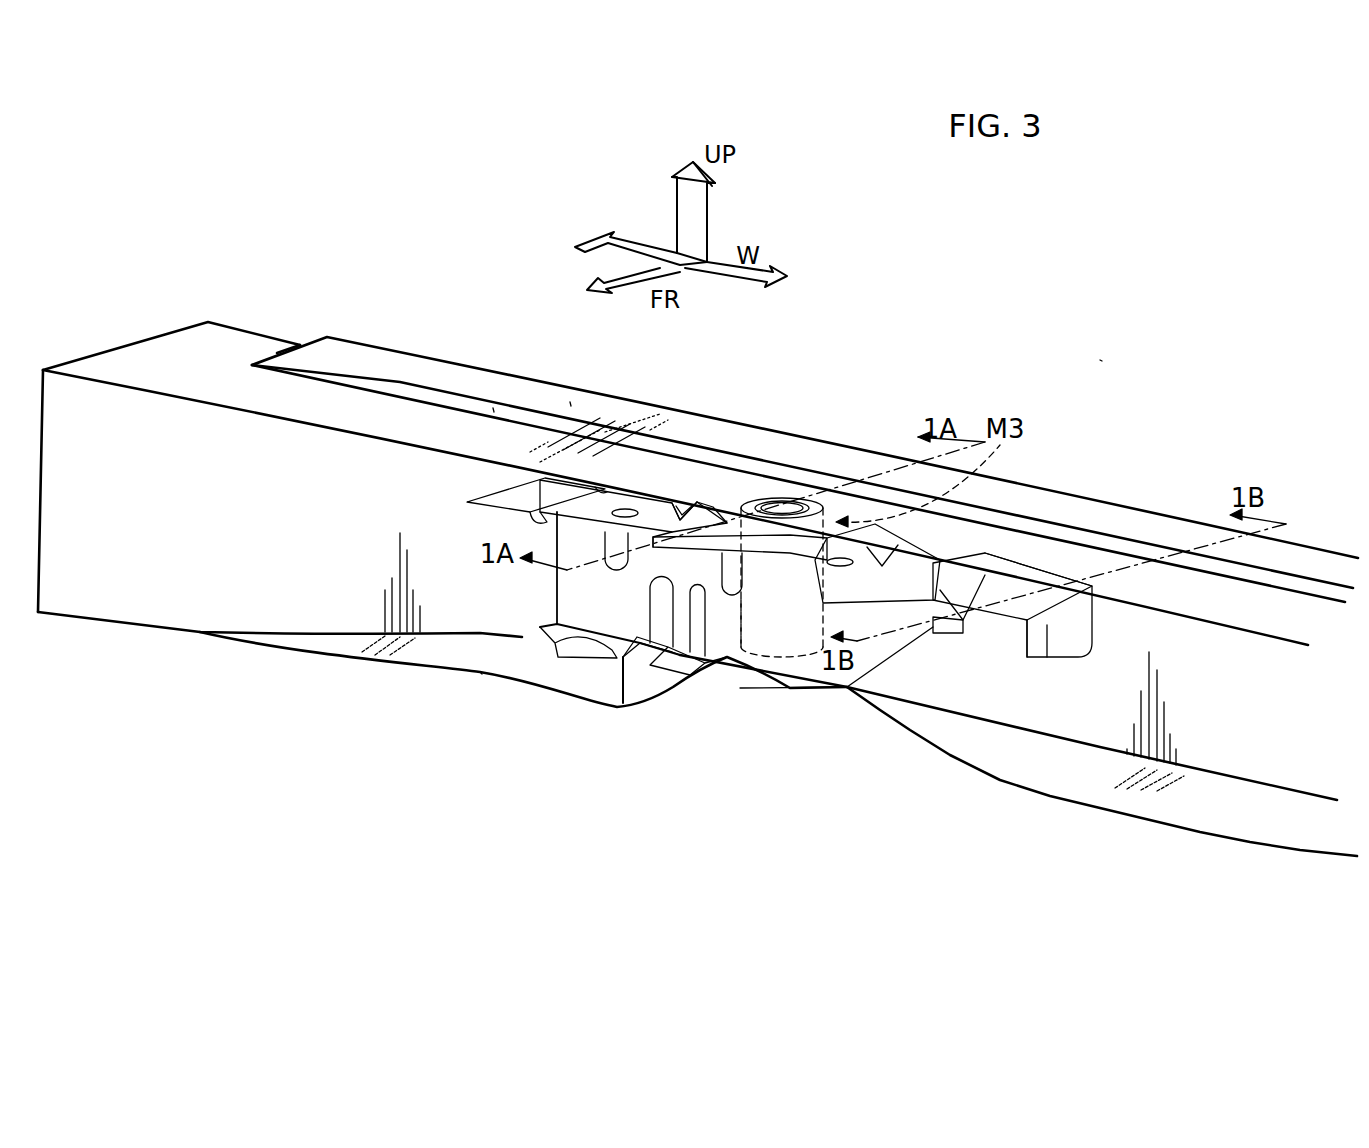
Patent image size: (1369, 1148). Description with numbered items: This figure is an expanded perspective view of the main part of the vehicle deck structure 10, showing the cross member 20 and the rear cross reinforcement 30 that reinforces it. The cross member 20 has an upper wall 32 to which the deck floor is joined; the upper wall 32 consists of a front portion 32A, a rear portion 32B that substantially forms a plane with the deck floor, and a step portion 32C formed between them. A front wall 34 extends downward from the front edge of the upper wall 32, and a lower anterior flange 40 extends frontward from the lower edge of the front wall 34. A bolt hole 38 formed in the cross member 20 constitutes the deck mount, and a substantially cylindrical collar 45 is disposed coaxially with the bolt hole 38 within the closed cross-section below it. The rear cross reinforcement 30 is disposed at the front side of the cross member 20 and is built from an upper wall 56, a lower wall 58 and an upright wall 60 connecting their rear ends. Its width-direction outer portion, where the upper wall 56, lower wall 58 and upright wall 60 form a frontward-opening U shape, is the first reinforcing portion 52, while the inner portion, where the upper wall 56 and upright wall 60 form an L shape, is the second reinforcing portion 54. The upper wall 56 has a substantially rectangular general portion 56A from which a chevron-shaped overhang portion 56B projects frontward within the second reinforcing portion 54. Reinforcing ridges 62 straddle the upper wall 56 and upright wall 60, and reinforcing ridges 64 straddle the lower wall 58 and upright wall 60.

The vehicle deck structure 10 is at (1100, 360).
The cross member 20 is at (250, 330).
The rear cross reinforcement 30 is at (788, 825).
The upper wall 32 is at (607, 337).
The front portion 32A is at (405, 422).
The rear portion 32B is at (570, 404).
The step portion 32C is at (493, 410).
The front wall 34 is at (168, 616).
The bolt hole 38 is at (783, 500).
The lower anterior flange 40 is at (485, 658).
The collar 45 is at (748, 626).
The first reinforcing portion 52 is at (758, 696).
The second reinforcing portion 54 is at (967, 648).
The upper wall 56 is at (1169, 475).
The general portion 56A is at (1011, 552).
The overhang portion 56B is at (952, 565).
The lower wall 58 is at (553, 638).
The upright wall 60 is at (568, 580).
The reinforcing ridges 62 is at (598, 488).
The reinforcing ridges 64 is at (633, 652).